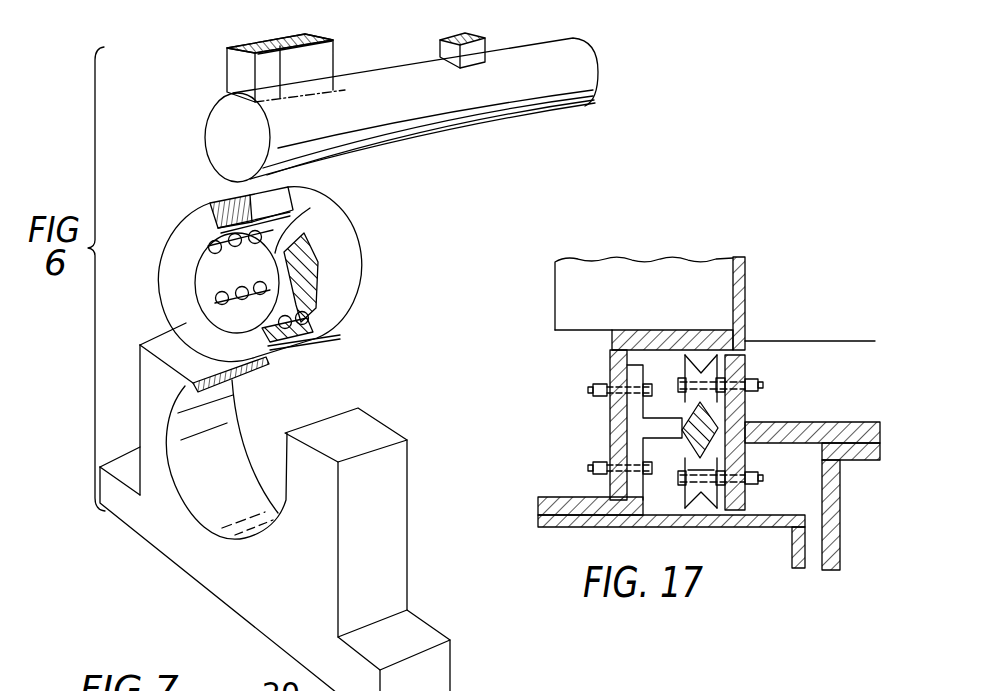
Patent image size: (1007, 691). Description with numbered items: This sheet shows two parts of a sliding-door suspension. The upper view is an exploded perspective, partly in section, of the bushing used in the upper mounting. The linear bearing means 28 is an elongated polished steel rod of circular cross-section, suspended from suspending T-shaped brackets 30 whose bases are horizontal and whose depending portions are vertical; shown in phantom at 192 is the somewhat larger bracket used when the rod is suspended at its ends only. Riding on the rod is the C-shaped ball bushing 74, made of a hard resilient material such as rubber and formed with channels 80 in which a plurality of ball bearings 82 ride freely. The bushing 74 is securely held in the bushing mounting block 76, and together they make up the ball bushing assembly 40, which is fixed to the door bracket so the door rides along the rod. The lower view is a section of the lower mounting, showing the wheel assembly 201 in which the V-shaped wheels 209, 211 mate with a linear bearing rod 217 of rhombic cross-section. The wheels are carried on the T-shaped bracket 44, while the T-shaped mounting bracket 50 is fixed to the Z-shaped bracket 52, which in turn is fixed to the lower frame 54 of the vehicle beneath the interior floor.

In FIG. 6, the linear bearing means 28 is at (505, 113).
In FIG. 6, the suspending T-shaped brackets 30 is at (237, 72).
In FIG. 6, the enlarged suspending bracket 192 is at (331, 57).
In FIG. 6, the ball bushing 74 is at (193, 227).
In FIG. 6, the channels 80 is at (283, 215).
In FIG. 6, the ball bearings 82 is at (277, 285).
In FIG. 6, the ball bushing assembly 40 is at (392, 326).
In FIG. 6, the bushing mounting block 76 is at (395, 528).
In FIG. 17, the V-shaped wheel 209 is at (630, 340).
In FIG. 17, the wheel assembly 201 is at (749, 358).
In FIG. 17, the linear bearing rod 217 is at (718, 418).
In FIG. 17, the T-shaped bracket 44 is at (848, 423).
In FIG. 17, the Z-shaped bracket 52 is at (618, 430).
In FIG. 17, the lower frame 54 is at (550, 529).
In FIG. 17, the T-shaped mounting bracket 50 is at (637, 491).
In FIG. 17, the V-shaped wheel 211 is at (708, 496).